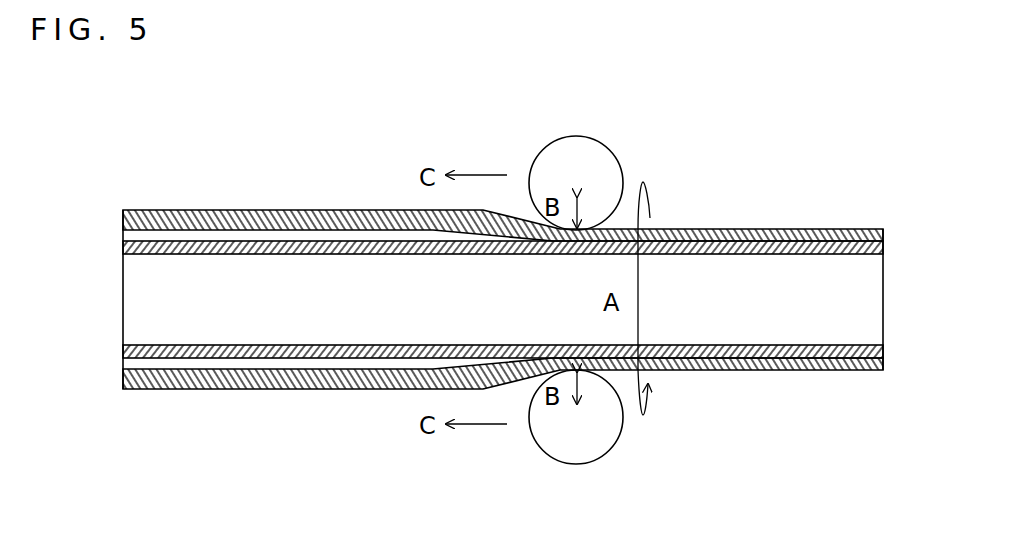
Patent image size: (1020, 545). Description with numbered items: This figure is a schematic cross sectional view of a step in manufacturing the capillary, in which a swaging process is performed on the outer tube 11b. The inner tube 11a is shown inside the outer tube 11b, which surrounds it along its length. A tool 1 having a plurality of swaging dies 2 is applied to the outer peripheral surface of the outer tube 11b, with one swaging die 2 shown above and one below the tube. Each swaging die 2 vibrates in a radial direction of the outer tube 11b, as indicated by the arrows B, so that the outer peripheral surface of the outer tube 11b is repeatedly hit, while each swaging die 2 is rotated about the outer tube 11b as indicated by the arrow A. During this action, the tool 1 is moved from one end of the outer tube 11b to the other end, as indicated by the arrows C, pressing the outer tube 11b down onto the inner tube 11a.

The tool 1 is at (655, 126).
The swaging die 2 is at (577, 136).
The inner tube 11a is at (263, 246).
The outer tube 11b is at (330, 209).